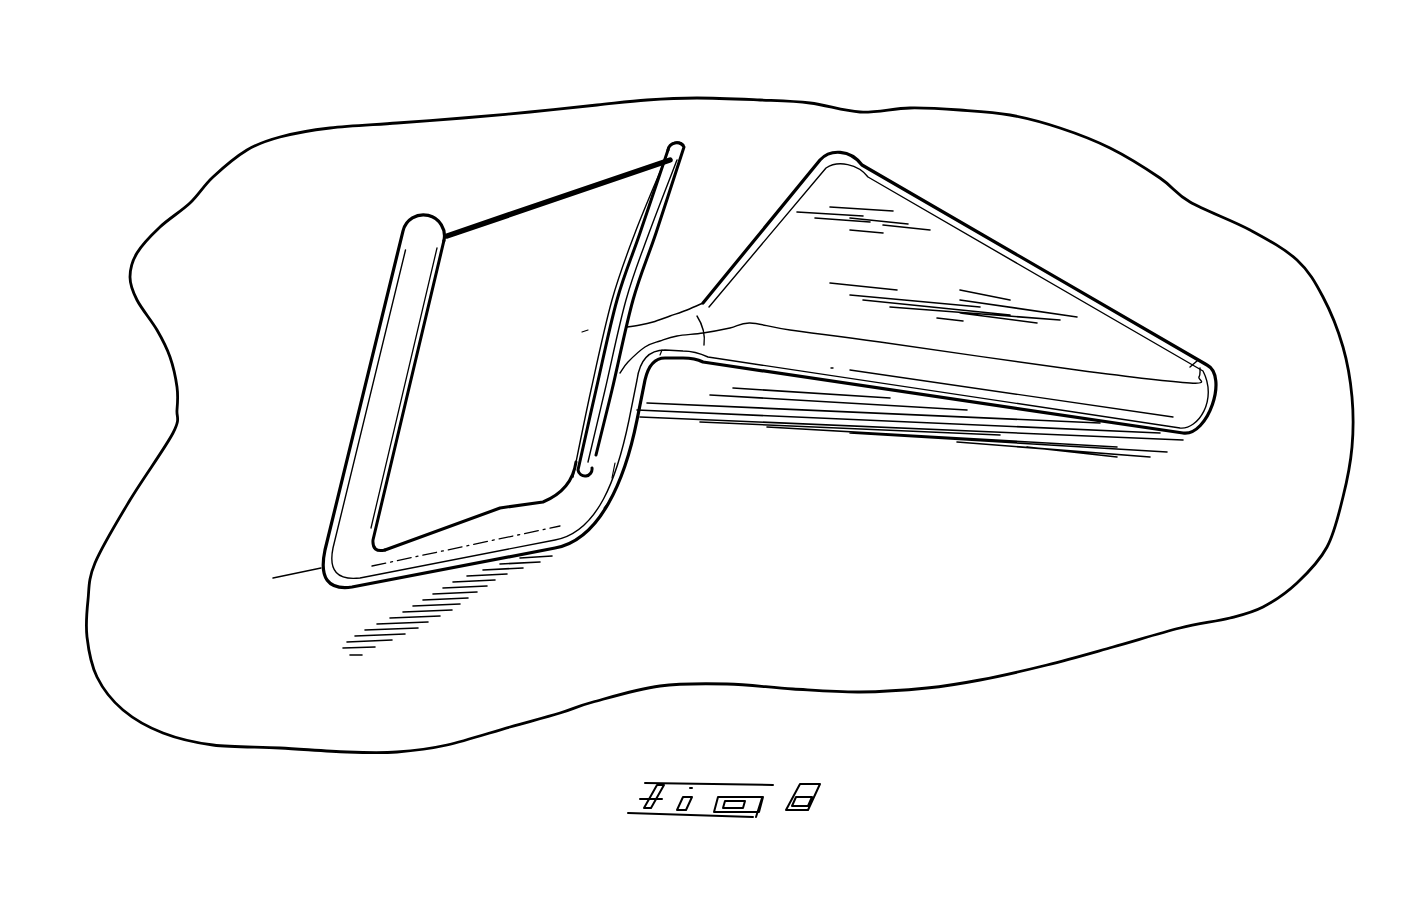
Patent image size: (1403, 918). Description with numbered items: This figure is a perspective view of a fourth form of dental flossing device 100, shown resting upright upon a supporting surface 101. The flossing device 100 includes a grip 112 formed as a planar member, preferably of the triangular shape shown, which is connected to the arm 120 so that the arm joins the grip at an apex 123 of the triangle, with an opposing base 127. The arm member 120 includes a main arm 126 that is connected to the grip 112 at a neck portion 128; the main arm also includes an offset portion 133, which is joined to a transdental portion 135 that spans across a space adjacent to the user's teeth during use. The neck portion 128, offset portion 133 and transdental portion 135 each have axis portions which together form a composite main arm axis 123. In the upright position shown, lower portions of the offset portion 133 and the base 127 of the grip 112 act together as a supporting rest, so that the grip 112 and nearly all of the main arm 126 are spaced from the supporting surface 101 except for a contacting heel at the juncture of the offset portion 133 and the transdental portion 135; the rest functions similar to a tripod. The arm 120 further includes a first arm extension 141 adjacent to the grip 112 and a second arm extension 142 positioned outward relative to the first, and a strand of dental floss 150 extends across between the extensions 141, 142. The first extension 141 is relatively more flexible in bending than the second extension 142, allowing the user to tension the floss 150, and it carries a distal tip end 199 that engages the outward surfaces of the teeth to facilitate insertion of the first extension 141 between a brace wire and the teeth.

The dental flossing device 100 is at (710, 385).
The supporting surface 101 is at (1267, 280).
The grip 112 is at (897, 207).
The arm 120 is at (635, 536).
The apex 123 is at (686, 334).
The main arm 126 is at (615, 463).
The base 127 is at (1050, 234).
The neck portion 128 is at (662, 350).
The offset portion 133 is at (588, 324).
The transdental portion 135 is at (362, 599).
The first arm extension 141 is at (662, 188).
The second arm extension 142 is at (393, 353).
The strand of dental floss 150 is at (560, 193).
The distal tip end 199 is at (684, 143).